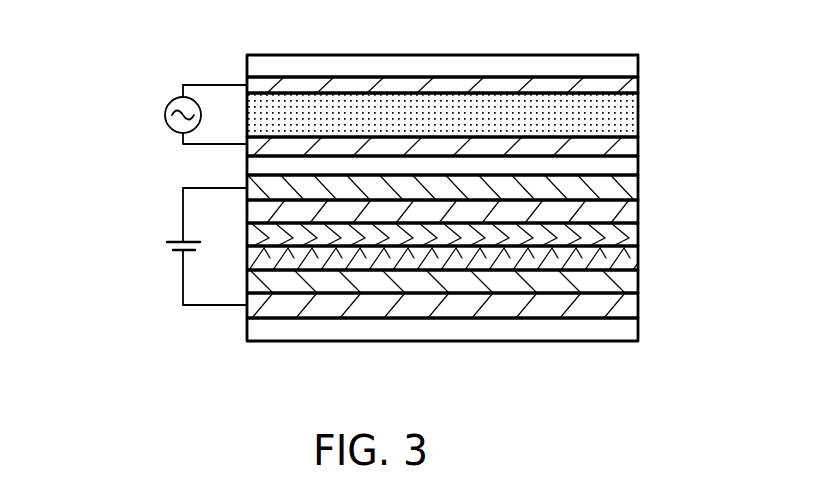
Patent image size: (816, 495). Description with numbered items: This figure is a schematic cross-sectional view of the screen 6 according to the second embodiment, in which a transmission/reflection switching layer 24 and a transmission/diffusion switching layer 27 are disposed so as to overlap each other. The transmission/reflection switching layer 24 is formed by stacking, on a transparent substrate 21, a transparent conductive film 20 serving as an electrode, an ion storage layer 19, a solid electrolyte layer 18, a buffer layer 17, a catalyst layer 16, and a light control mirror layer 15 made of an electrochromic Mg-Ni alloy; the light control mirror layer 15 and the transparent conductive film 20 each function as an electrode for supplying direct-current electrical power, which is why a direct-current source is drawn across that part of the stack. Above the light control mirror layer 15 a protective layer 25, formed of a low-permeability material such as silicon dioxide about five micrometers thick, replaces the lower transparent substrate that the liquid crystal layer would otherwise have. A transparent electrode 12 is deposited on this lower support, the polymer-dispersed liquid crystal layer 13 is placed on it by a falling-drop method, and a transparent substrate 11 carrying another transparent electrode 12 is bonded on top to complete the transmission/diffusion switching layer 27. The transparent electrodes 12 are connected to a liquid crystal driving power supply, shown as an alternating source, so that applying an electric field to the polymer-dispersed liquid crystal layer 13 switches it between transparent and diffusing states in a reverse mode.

The screen 6 is at (86, 55).
The transmission/diffusion switching layer 27 is at (147, 55).
The transmission/reflection switching layer 24 is at (147, 155).
The transparent substrate 11 is at (637, 62).
The transparent electrode 12 is at (637, 84).
The polymer-dispersed liquid crystal layer 13 is at (637, 117).
The protective layer 25 is at (637, 166).
The light control mirror layer 15 is at (637, 189).
The catalyst layer 16 is at (637, 211).
The buffer layer 17 is at (637, 234).
The solid electrolyte layer 18 is at (637, 257).
The ion storage layer 19 is at (637, 281).
The transparent conductive film 20 is at (637, 306).
The transparent substrate 21 is at (637, 329).